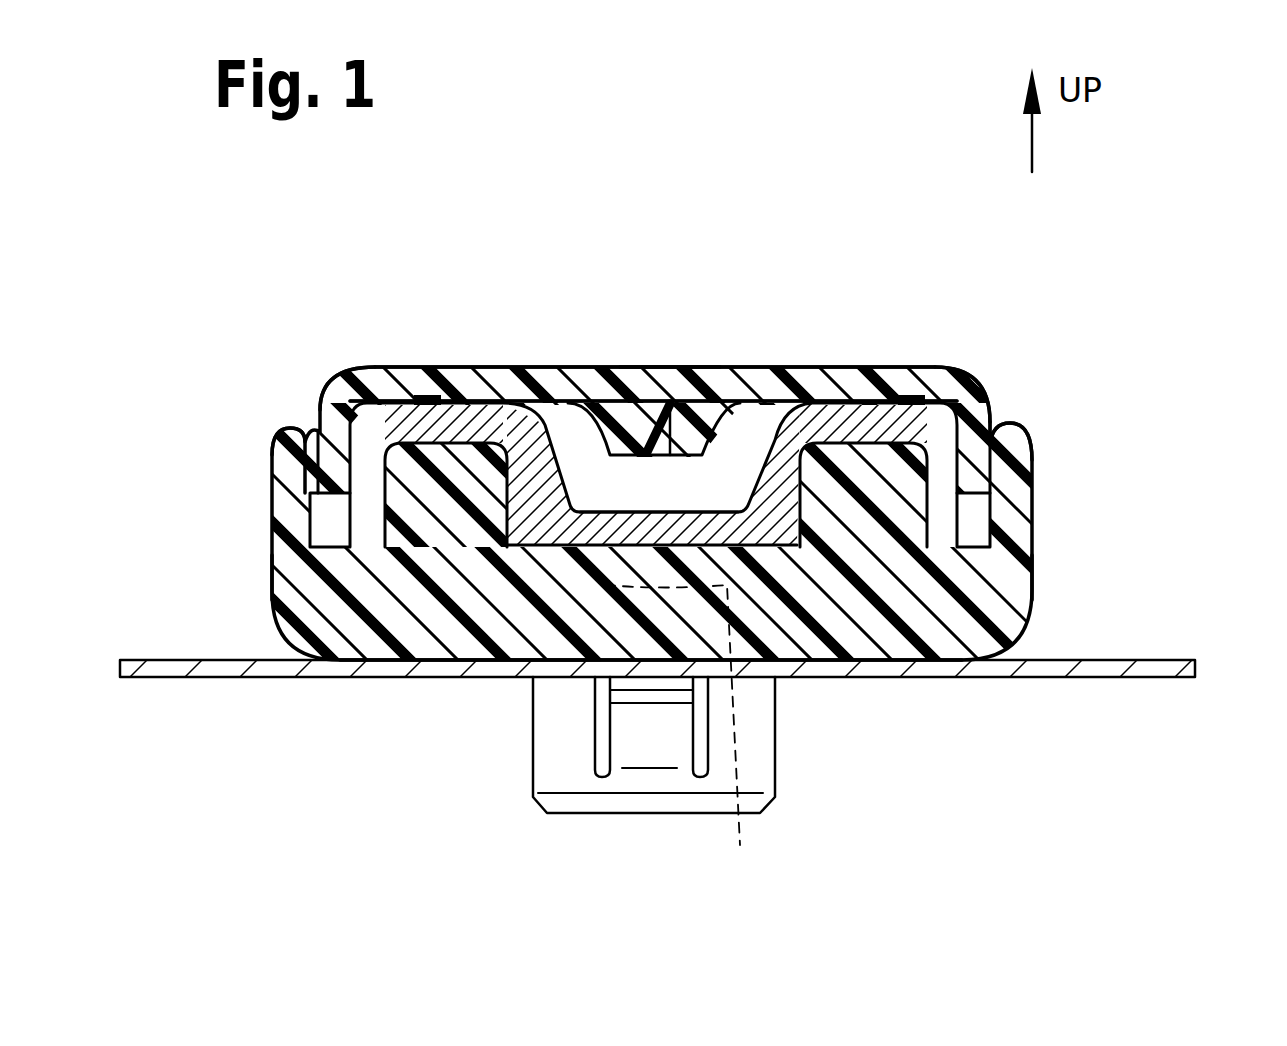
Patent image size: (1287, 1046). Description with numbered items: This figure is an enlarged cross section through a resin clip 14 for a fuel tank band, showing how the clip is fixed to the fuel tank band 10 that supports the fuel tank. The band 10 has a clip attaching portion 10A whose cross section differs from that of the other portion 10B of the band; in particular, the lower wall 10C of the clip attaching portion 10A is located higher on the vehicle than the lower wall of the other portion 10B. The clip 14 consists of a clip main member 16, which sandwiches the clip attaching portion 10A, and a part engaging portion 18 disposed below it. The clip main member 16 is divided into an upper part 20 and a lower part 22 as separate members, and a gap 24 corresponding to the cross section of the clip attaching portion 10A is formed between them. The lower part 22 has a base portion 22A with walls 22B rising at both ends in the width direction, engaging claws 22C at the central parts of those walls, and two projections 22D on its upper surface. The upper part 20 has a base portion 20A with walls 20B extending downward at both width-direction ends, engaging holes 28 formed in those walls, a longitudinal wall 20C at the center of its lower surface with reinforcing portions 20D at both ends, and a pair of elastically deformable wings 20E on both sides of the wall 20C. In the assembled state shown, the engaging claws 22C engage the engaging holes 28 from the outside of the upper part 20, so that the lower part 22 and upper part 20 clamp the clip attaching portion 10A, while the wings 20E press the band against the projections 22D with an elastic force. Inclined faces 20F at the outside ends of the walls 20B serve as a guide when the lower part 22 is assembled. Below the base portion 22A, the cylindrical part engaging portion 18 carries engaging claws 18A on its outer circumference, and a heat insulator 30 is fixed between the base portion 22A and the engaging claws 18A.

The fuel tank band 10 is at (673, 493).
The clip attaching portion 10A is at (604, 510).
The other portion 10B is at (702, 735).
The lower wall 10C is at (513, 673).
The clip for the fuel tank band 14 is at (1208, 353).
The clip main member 16 is at (1133, 278).
The part engaging portion 18 is at (790, 767).
The engaging claws 18A is at (653, 707).
The upper part 20 is at (993, 383).
The base portion 20A is at (553, 393).
The walls 20B is at (335, 432).
The wall 20C is at (668, 372).
The reinforcing portions 20D is at (630, 425).
The wings 20E is at (438, 398).
The inclined faces 20F is at (280, 573).
The lower part 22 is at (1043, 587).
The base portion 22A is at (445, 657).
The walls 22B is at (302, 493).
The engaging claws 22C is at (357, 417).
The projections 22D is at (468, 398).
The gap 24 is at (756, 438).
The engaging holes 28 is at (322, 497).
The heat insulator 30 is at (192, 680).